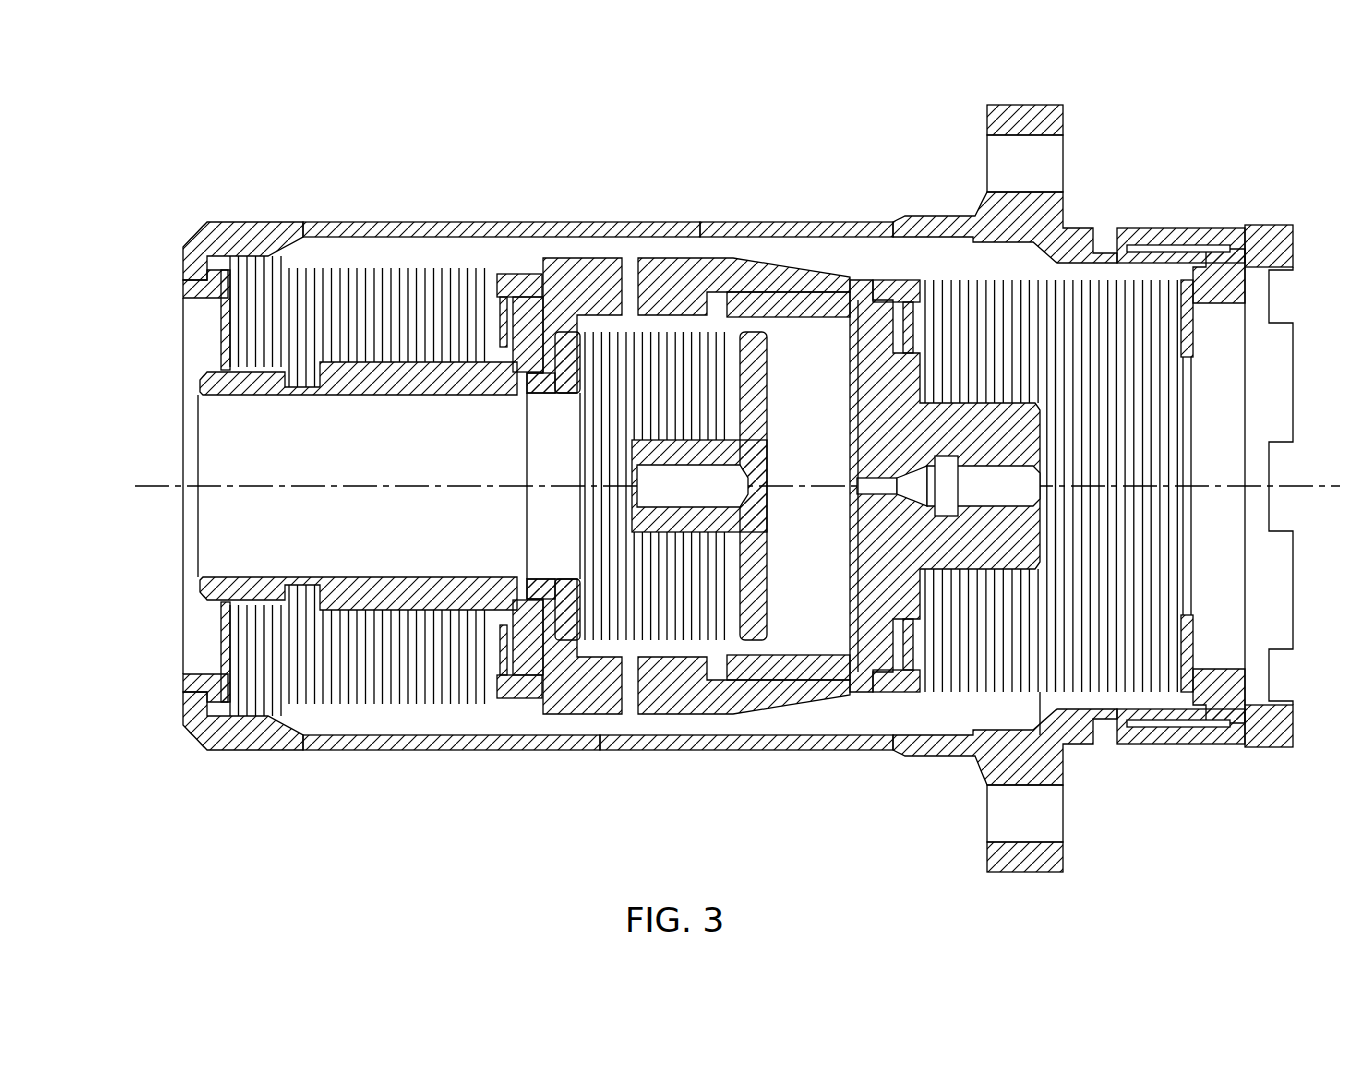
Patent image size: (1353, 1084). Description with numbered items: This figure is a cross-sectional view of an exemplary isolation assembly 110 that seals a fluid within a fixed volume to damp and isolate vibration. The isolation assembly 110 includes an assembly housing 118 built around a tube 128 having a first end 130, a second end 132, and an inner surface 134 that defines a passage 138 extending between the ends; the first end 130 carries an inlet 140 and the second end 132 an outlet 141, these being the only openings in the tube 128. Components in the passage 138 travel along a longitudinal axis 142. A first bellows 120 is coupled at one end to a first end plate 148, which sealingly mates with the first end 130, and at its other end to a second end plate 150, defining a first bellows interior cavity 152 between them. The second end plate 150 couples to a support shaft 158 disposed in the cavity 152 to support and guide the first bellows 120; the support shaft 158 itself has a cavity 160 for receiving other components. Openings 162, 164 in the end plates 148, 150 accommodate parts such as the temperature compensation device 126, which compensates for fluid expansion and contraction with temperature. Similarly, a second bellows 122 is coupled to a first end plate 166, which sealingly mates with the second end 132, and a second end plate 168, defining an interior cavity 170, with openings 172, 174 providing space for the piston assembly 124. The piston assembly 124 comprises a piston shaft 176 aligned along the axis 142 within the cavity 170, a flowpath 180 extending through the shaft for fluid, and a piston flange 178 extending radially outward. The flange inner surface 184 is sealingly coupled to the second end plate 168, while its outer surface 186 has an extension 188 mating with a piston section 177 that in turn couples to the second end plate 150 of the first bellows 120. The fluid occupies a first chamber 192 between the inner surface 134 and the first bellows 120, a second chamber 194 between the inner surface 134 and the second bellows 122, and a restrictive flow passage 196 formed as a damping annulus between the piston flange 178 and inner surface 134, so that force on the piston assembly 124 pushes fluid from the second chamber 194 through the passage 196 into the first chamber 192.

The isolation assembly 110 is at (578, 186).
The assembly housing 118 is at (250, 222).
The first bellows 120 is at (339, 262).
The second bellows 122 is at (963, 266).
The piston assembly 124 is at (968, 564).
The temperature compensation device 126 is at (607, 644).
The tube 128 is at (438, 742).
The first end 130 is at (183, 262).
The second end 132 is at (1234, 248).
The inner surface 134 is at (392, 238).
The passage 138 is at (801, 244).
The inlet 140 is at (182, 372).
The outlet 141 is at (1203, 394).
The longitudinal axis 142 is at (342, 488).
The first end plate 148 is at (186, 292).
The second end plate 150 is at (527, 274).
The first bellows interior cavity 152 is at (304, 356).
The support shaft 158 is at (258, 376).
The cavity 160 is at (439, 454).
The opening 162 is at (216, 346).
The opening 164 is at (495, 372).
The first end plate 166 is at (1236, 300).
The second end plate 168 is at (890, 280).
The interior cavity 170 is at (1048, 365).
The opening 172 is at (1192, 587).
The opening 174 is at (868, 600).
The piston shaft 176 is at (1020, 546).
The piston section 177 is at (666, 264).
The piston flange 178 is at (864, 691).
The flowpath 180 is at (996, 463).
The inner surface 184 is at (904, 732).
The outer surface 186 is at (839, 700).
The extension 188 is at (789, 656).
The first chamber 192 is at (423, 726).
The second chamber 194 is at (1006, 728).
The restrictive flow passage 196 is at (613, 734).